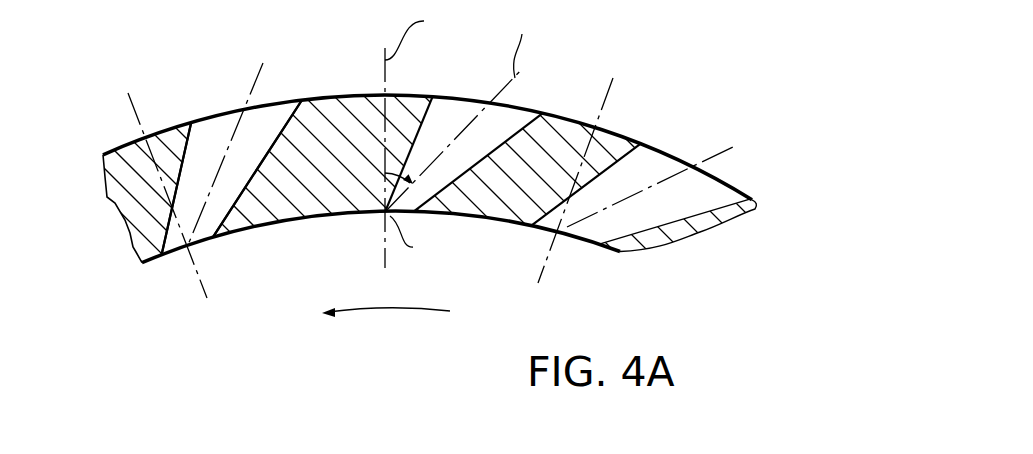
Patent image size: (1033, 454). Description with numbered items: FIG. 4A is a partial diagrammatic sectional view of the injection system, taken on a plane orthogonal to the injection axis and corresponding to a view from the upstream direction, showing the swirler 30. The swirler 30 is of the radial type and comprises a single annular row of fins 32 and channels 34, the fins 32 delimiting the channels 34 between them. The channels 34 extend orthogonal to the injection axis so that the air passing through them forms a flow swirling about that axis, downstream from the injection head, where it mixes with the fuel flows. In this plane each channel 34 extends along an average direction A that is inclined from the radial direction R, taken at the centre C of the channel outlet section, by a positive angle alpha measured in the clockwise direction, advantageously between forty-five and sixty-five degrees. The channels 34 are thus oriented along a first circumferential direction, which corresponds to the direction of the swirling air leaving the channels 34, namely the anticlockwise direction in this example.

The swirler 30 is at (650, 98).
The fins 32 is at (268, 218).
The channels 34 is at (213, 147).